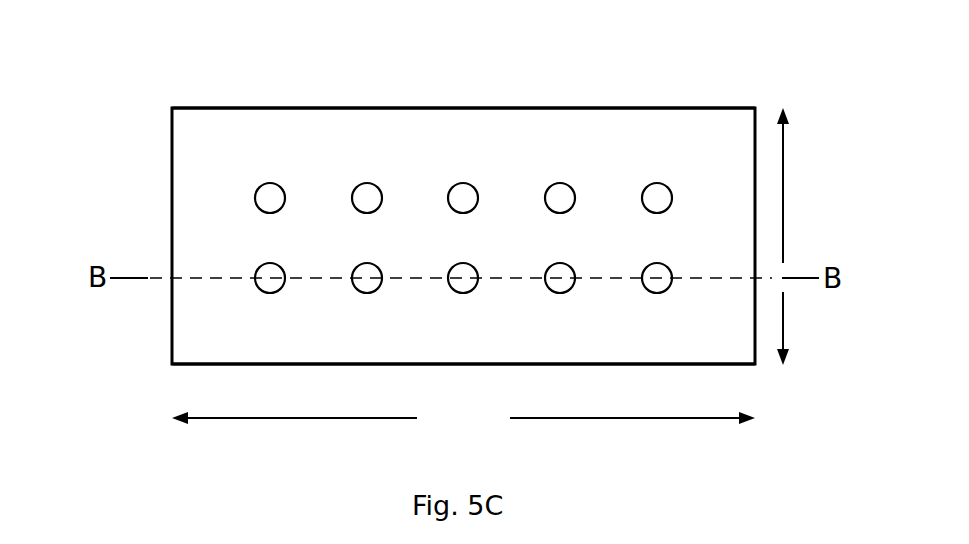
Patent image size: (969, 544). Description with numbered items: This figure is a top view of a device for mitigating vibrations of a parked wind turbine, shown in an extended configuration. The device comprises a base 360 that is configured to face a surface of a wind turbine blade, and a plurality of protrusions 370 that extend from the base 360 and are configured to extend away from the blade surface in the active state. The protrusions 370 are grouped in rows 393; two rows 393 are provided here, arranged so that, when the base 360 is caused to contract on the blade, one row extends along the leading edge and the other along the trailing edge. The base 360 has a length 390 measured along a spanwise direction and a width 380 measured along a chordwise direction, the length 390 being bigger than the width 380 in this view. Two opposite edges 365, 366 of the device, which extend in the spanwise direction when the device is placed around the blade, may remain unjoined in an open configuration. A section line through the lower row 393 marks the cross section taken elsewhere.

The base 360 is at (226, 128).
The edge 365 is at (463, 108).
The edge 366 is at (486, 364).
The protrusions 370 is at (657, 183).
The width 380 is at (787, 200).
The length 390 is at (635, 419).
The rows 393 is at (156, 201).